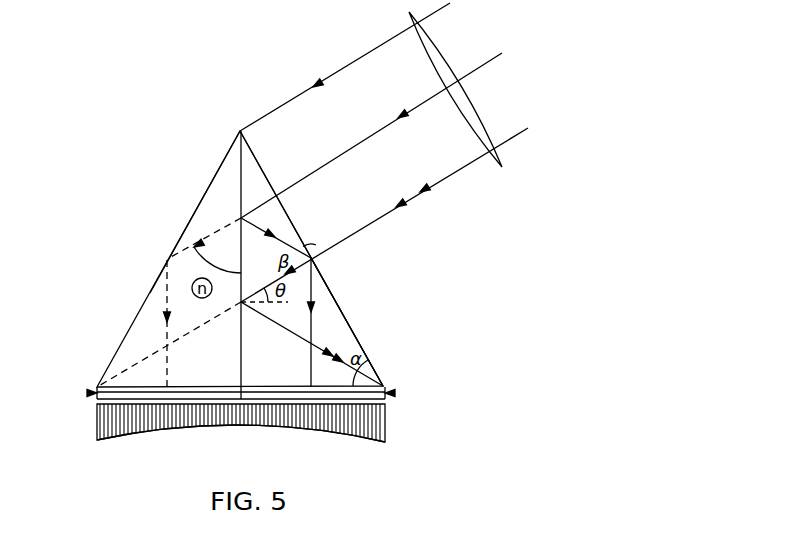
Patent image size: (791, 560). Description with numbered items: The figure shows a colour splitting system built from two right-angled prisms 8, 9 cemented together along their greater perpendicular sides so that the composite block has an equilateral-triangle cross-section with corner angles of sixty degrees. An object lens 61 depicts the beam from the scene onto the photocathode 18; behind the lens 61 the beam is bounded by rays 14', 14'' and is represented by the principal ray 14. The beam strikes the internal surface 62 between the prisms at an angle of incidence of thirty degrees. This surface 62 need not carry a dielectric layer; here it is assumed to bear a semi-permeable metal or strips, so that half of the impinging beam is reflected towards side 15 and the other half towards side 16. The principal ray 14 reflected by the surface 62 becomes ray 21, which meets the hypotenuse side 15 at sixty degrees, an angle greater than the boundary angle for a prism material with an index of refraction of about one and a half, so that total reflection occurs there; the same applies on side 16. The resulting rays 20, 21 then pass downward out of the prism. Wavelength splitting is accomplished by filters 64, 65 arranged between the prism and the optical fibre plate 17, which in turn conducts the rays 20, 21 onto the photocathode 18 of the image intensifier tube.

The right-angled prism 9 is at (205, 215).
The right-angled prism 8 is at (333, 305).
The hypotenuse side 15 is at (351, 327).
The hypotenuse side 16 is at (150, 293).
The principal ray 14 is at (371, 155).
The boundary ray 14' is at (345, 67).
The boundary ray 14'' is at (384, 215).
The object lens 61 is at (443, 53).
The splitting surface 62 is at (193, 246).
The ray 20 is at (168, 380).
The ray 21 is at (311, 357).
The filter 64 is at (88, 393).
The filter 65 is at (394, 393).
The optical fibre plate 17 is at (385, 432).
The photocathode 18 is at (253, 427).